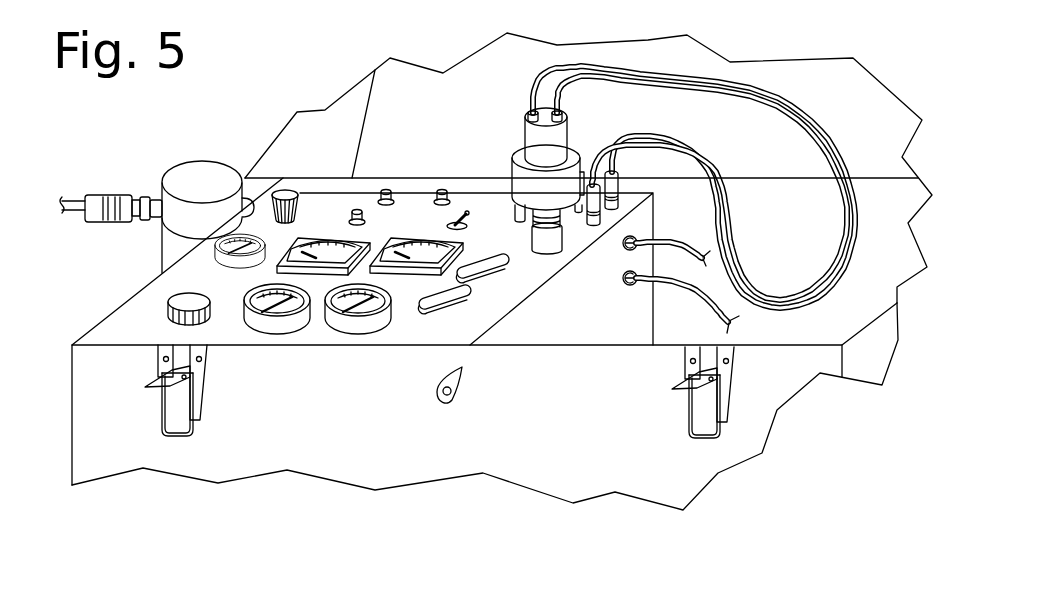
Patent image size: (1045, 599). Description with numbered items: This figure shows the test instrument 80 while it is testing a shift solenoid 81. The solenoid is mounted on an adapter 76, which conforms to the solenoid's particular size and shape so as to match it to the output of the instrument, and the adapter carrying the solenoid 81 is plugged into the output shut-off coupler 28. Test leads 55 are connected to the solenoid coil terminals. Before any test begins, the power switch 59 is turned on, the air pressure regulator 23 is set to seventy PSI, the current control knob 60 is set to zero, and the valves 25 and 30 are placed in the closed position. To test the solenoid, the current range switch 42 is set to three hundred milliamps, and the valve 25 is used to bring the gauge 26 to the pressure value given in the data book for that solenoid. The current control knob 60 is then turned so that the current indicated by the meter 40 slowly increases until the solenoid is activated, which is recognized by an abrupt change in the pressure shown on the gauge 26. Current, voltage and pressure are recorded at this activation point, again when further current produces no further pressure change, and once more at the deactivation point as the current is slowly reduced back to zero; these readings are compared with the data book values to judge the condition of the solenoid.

The test instrument 80 is at (121, 495).
The test leads 55 is at (757, 88).
The adapter 76 is at (510, 165).
The shift solenoid 81 is at (568, 130).
The output shut-off coupler 28 is at (550, 250).
The air pressure regulator 23 is at (275, 187).
The current control knob 60 is at (167, 313).
The gauge 26 is at (270, 335).
The meter 40 is at (417, 232).
The power switch 59 is at (438, 188).
The current range switch 42 is at (455, 220).
The valve 25 is at (483, 277).
The valve 30 is at (448, 305).